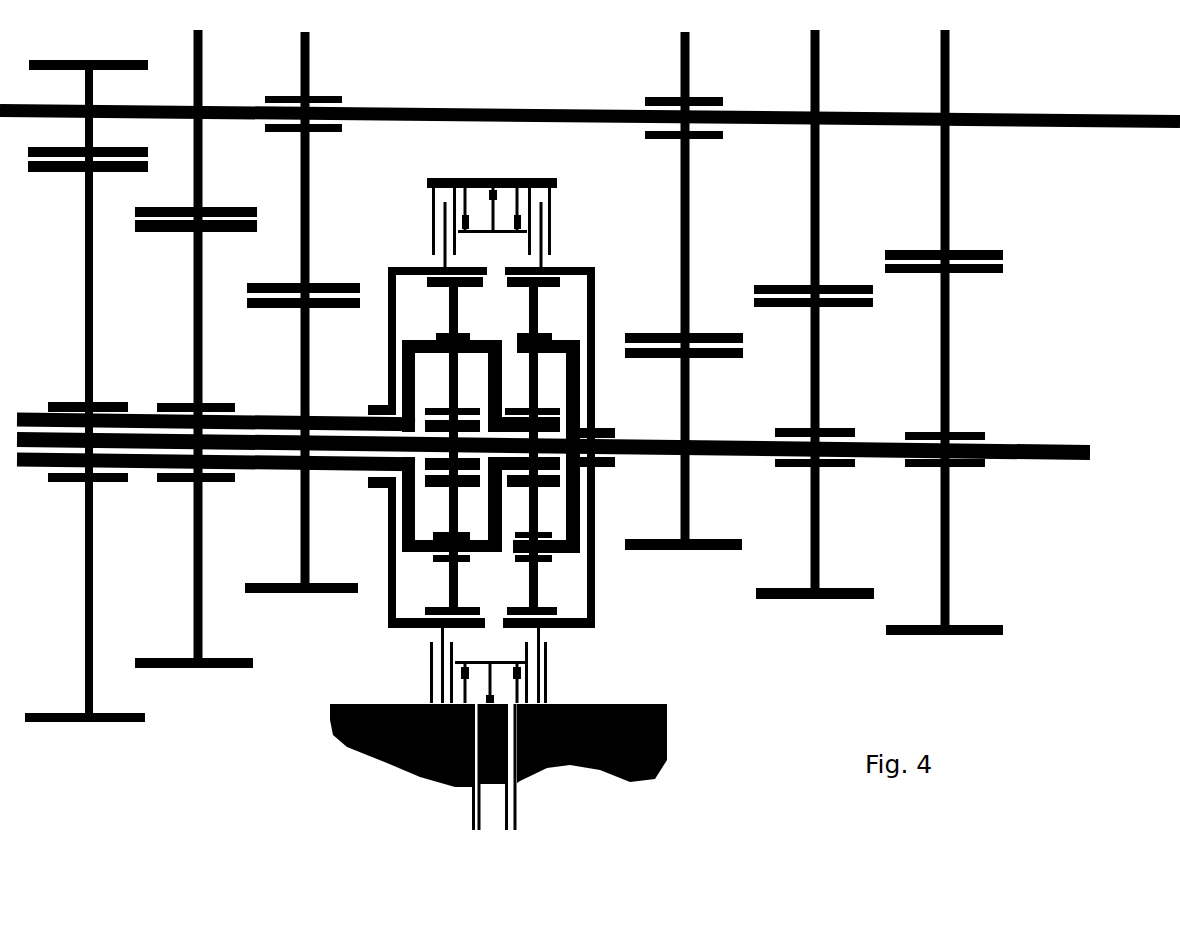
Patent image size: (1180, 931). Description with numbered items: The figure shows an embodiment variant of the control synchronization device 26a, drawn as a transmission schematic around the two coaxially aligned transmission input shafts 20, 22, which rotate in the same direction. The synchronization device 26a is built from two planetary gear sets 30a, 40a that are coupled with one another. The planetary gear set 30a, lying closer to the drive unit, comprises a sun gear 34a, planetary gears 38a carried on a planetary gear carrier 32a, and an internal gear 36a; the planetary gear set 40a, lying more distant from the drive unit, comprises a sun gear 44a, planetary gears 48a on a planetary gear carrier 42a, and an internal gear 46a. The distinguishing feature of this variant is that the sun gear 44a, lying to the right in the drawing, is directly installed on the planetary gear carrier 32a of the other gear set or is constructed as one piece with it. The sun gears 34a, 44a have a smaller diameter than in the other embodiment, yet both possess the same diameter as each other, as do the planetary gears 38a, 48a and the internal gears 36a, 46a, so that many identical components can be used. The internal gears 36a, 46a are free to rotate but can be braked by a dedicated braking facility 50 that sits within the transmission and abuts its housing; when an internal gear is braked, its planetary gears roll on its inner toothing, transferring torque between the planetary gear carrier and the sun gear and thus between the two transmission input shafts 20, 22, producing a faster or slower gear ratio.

The transmission input shaft 20 is at (250, 470).
The transmission input shaft 22 is at (140, 469).
The synchronization device 26a is at (604, 576).
The planetary gear set 30a is at (411, 598).
The planetary gear carrier 32a is at (402, 383).
The sun gear 34a is at (447, 456).
The internal gear 36a is at (408, 267).
The planetary gear 38a is at (448, 315).
The planetary gear set 40a is at (574, 605).
The planetary gear carrier 42a is at (582, 508).
The sun gear 44a is at (580, 425).
The internal gear 46a is at (567, 267).
The planetary gear 48a is at (538, 312).
The braking facility 50 is at (501, 170).